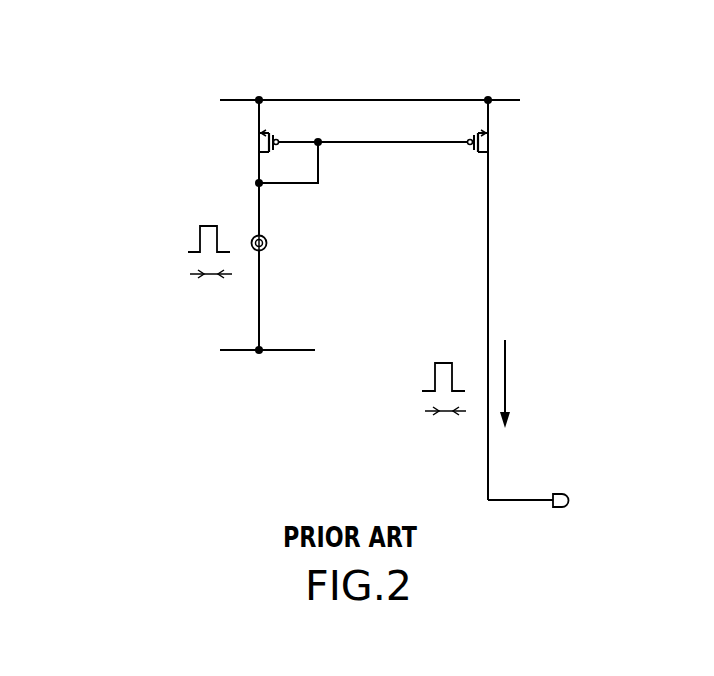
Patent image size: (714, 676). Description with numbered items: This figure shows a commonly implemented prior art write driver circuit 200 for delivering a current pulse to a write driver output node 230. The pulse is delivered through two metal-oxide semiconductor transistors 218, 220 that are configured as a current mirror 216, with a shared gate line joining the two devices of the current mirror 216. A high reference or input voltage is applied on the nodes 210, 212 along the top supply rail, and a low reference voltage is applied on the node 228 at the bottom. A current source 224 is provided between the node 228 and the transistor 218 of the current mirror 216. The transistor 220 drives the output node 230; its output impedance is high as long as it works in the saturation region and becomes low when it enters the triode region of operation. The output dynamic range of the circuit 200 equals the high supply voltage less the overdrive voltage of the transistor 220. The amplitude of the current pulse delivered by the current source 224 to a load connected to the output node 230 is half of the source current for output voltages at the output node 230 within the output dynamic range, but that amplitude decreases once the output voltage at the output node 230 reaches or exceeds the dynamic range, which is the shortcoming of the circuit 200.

The write driver circuit 200 is at (152, 109).
The node 210 is at (260, 99).
The node 212 is at (490, 99).
The current mirror 216 is at (377, 163).
The transistor 218 is at (258, 139).
The transistor 220 is at (491, 137).
The current source 224 is at (267, 238).
The node 228 is at (264, 348).
The write driver output node 230 is at (561, 508).